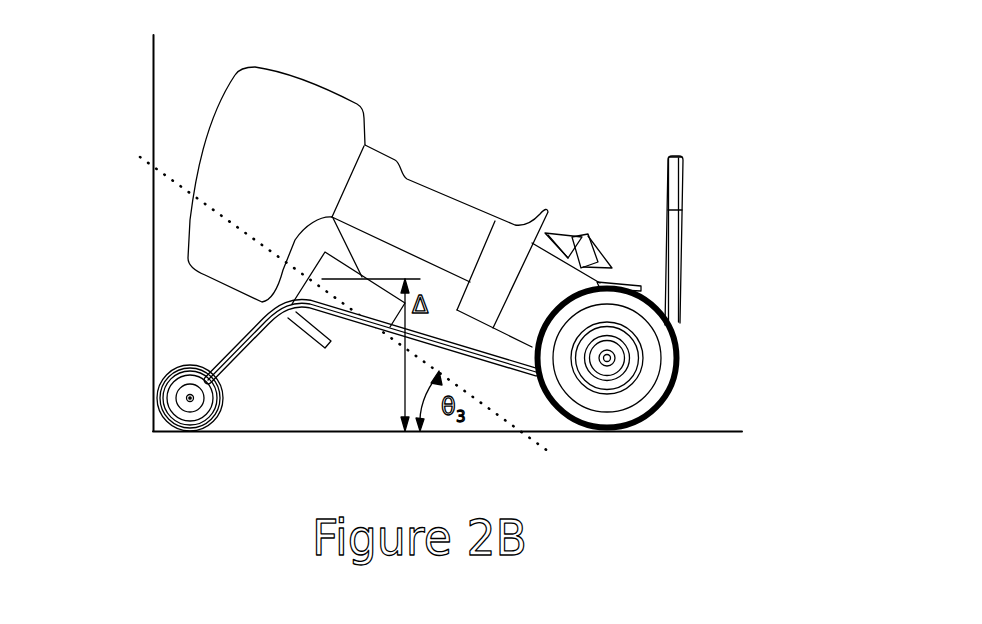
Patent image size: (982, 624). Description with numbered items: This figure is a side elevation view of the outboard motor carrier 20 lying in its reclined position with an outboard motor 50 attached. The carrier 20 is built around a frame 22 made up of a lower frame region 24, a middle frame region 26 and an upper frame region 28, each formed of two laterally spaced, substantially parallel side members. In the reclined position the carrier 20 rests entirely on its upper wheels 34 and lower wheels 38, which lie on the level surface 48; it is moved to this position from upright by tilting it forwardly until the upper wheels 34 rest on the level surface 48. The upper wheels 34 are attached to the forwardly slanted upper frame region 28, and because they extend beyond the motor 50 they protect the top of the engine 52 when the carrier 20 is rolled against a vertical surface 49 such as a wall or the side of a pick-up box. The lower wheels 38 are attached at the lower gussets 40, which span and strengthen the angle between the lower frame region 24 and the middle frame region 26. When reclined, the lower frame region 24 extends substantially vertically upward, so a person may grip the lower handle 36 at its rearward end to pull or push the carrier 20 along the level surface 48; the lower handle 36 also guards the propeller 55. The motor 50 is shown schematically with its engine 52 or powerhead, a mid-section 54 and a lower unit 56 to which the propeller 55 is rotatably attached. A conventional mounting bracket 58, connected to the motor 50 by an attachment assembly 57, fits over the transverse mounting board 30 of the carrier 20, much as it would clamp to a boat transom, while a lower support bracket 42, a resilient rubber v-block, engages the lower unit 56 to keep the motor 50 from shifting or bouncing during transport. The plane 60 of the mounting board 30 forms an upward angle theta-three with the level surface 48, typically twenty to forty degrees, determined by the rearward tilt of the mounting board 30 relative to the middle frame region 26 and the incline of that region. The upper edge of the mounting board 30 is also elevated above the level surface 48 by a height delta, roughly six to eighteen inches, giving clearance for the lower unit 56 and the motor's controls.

The outboard motor carrier 20 is at (760, 156).
The frame 22 is at (287, 341).
The lower frame region 24 is at (675, 237).
The middle frame region 26 is at (358, 318).
The upper frame region 28 is at (231, 355).
The mounting board 30 is at (375, 333).
The upper wheels 34 is at (181, 398).
The lower handle 36 is at (675, 155).
The lower wheels 38 is at (662, 358).
The lower gussets 40 is at (667, 310).
The lower support bracket 42 is at (535, 375).
The level surface 48 is at (671, 432).
The vertical surface 49 is at (153, 99).
The outboard motor 50 is at (283, 75).
The engine 52 is at (302, 118).
The mid-section 54 is at (417, 205).
The propeller 55 is at (570, 238).
The lower unit 56 is at (552, 268).
The attachment assembly 57 is at (365, 250).
The mounting bracket 58 is at (316, 337).
The plane of mounting board 60 is at (180, 185).